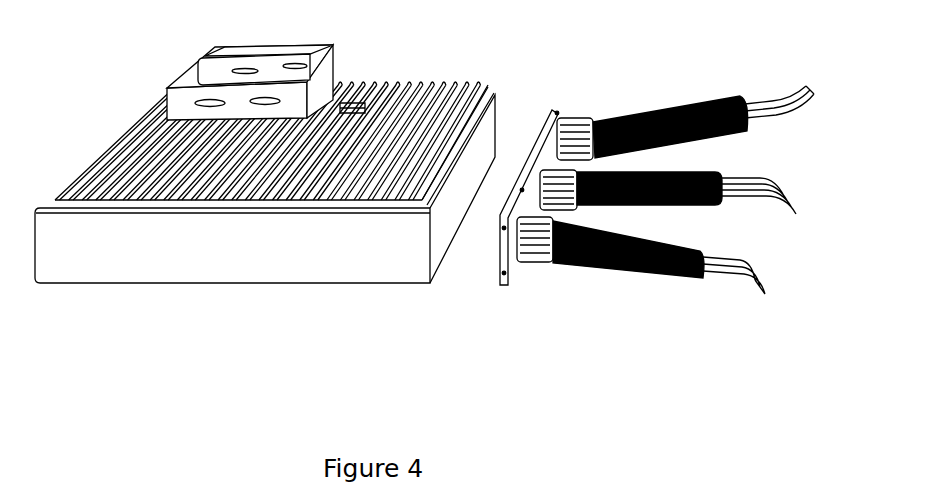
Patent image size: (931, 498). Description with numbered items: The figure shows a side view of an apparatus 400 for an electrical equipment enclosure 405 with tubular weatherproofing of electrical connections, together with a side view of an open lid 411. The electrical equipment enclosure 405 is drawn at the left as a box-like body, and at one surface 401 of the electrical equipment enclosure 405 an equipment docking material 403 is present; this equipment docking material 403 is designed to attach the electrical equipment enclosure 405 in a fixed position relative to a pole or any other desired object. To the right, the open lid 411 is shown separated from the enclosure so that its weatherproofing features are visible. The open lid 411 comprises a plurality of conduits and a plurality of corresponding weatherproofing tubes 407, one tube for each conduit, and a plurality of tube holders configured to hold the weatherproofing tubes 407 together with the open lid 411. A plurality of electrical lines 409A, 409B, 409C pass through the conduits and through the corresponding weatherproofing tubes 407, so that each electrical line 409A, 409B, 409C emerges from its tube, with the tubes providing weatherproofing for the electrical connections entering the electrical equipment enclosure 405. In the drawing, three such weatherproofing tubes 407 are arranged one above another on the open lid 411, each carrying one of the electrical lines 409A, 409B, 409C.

The apparatus 400 is at (426, 219).
The surface 401 is at (170, 191).
The equipment docking material 403 is at (307, 69).
The electrical equipment enclosure 405 is at (210, 264).
The weatherproofing tubes 407 is at (700, 138).
The electrical line 409A is at (778, 116).
The electrical line 409B is at (767, 205).
The electrical line 409C is at (706, 286).
The open lid 411 is at (544, 156).